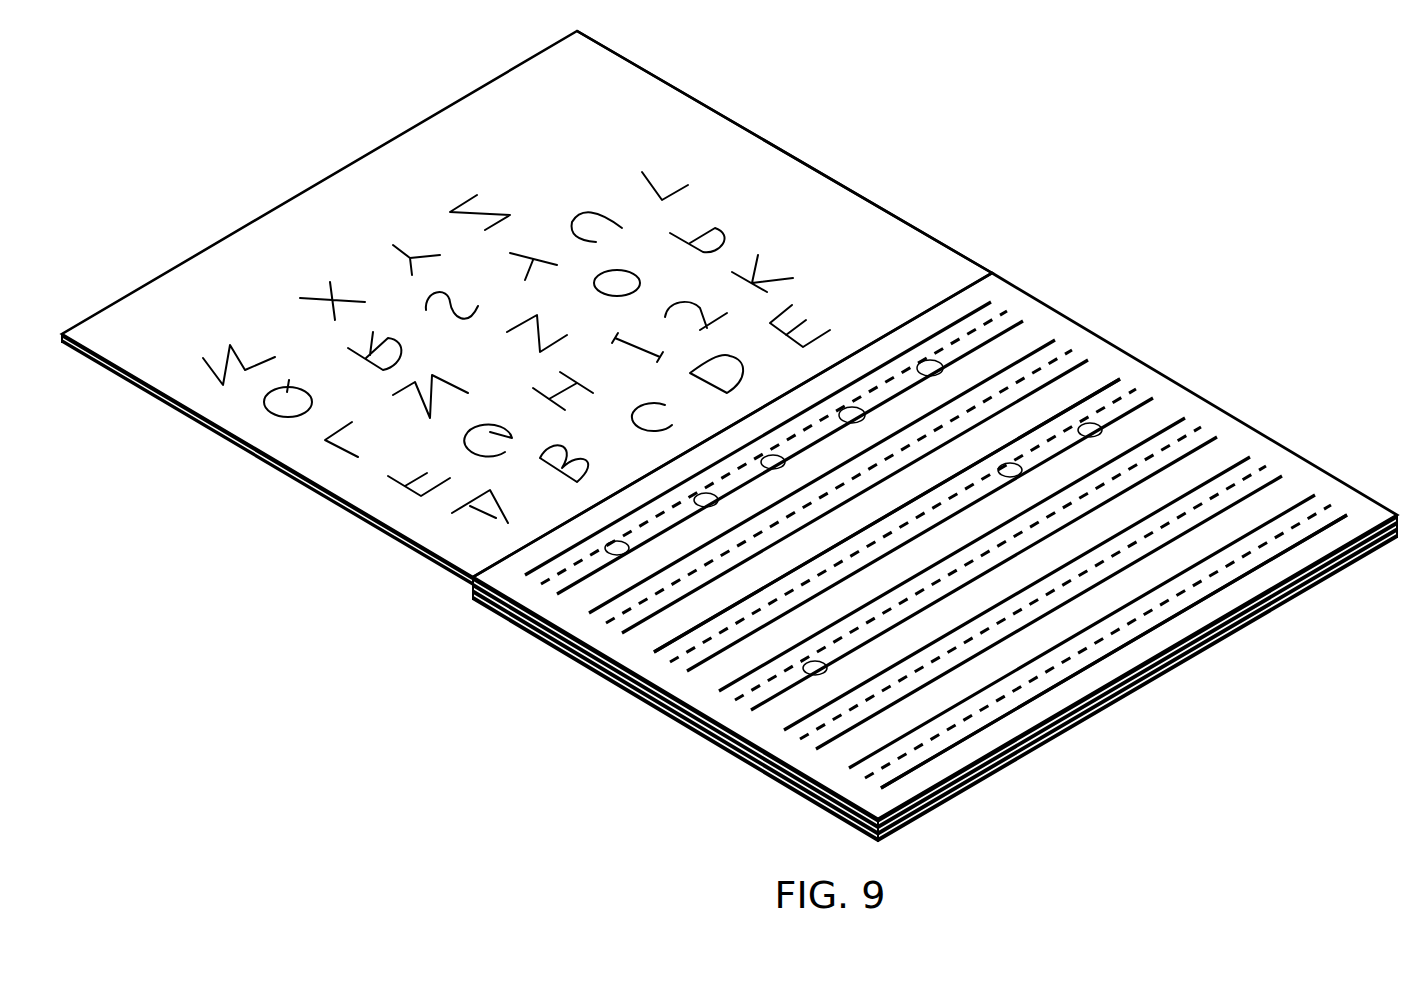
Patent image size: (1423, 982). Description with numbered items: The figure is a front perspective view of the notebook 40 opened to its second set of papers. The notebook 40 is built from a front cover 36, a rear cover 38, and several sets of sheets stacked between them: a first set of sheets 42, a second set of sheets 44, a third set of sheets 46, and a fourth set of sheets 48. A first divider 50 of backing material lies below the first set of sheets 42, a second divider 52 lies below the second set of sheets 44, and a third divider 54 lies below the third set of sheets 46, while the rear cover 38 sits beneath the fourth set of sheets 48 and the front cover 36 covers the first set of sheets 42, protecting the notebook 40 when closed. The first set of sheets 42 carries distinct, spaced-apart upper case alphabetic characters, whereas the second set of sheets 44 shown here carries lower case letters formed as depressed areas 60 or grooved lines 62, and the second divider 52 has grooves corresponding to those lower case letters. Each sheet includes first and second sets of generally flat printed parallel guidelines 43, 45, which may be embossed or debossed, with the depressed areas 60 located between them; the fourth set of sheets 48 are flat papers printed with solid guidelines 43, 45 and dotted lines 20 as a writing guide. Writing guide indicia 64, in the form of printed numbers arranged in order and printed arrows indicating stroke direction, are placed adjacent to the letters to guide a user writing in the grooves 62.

The dotted lines 20 is at (1263, 540).
The front cover 36 is at (250, 455).
The rear cover 38 is at (932, 808).
The notebook 40 is at (1125, 207).
The first set of sheets 42 is at (397, 540).
The first set of guidelines 43 is at (1040, 350).
The second set of sheets 44 is at (497, 566).
The second set of guidelines 45 is at (1075, 375).
The third set of sheets 46 is at (585, 650).
The fourth set of sheets 48 is at (705, 736).
The first divider 50 is at (817, 177).
The second divider 52 is at (545, 622).
The third divider 54 is at (645, 690).
The depressed areas 60 is at (931, 356).
The grooves 62 is at (860, 406).
The writing guide indicia 64 is at (676, 504).